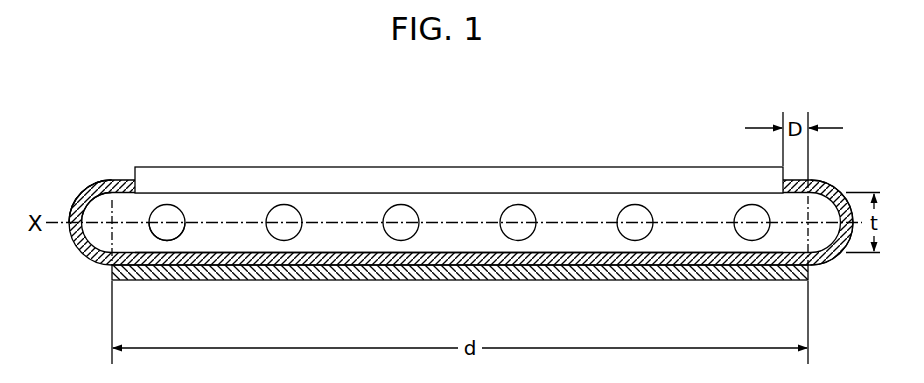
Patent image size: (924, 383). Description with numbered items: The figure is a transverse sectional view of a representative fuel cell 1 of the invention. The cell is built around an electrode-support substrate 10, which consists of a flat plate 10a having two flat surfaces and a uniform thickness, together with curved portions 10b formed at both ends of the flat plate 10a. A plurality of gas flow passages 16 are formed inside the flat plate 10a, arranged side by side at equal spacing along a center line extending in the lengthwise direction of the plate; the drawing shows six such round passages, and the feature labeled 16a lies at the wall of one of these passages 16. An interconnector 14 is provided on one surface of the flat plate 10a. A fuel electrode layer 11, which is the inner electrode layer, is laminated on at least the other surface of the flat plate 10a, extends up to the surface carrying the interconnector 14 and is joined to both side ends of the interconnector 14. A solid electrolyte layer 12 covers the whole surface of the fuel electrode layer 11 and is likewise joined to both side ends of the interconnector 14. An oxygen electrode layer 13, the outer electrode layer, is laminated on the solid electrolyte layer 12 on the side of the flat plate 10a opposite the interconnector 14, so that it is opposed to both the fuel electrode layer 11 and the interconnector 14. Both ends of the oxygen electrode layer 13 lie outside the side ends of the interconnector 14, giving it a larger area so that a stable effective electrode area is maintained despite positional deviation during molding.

The fuel cell 1 is at (75, 168).
The electrode-support substrate 10 is at (237, 95).
The flat plate 10a is at (222, 217).
The curved portions 10b is at (100, 213).
The fuel electrode layer 11 is at (288, 256).
The solid electrolyte layer 12 is at (823, 264).
The oxygen electrode layer 13 is at (392, 272).
The interconnector 14 is at (553, 176).
The gas flow passages 16 is at (400, 213).
The tube wall 16a is at (167, 232).